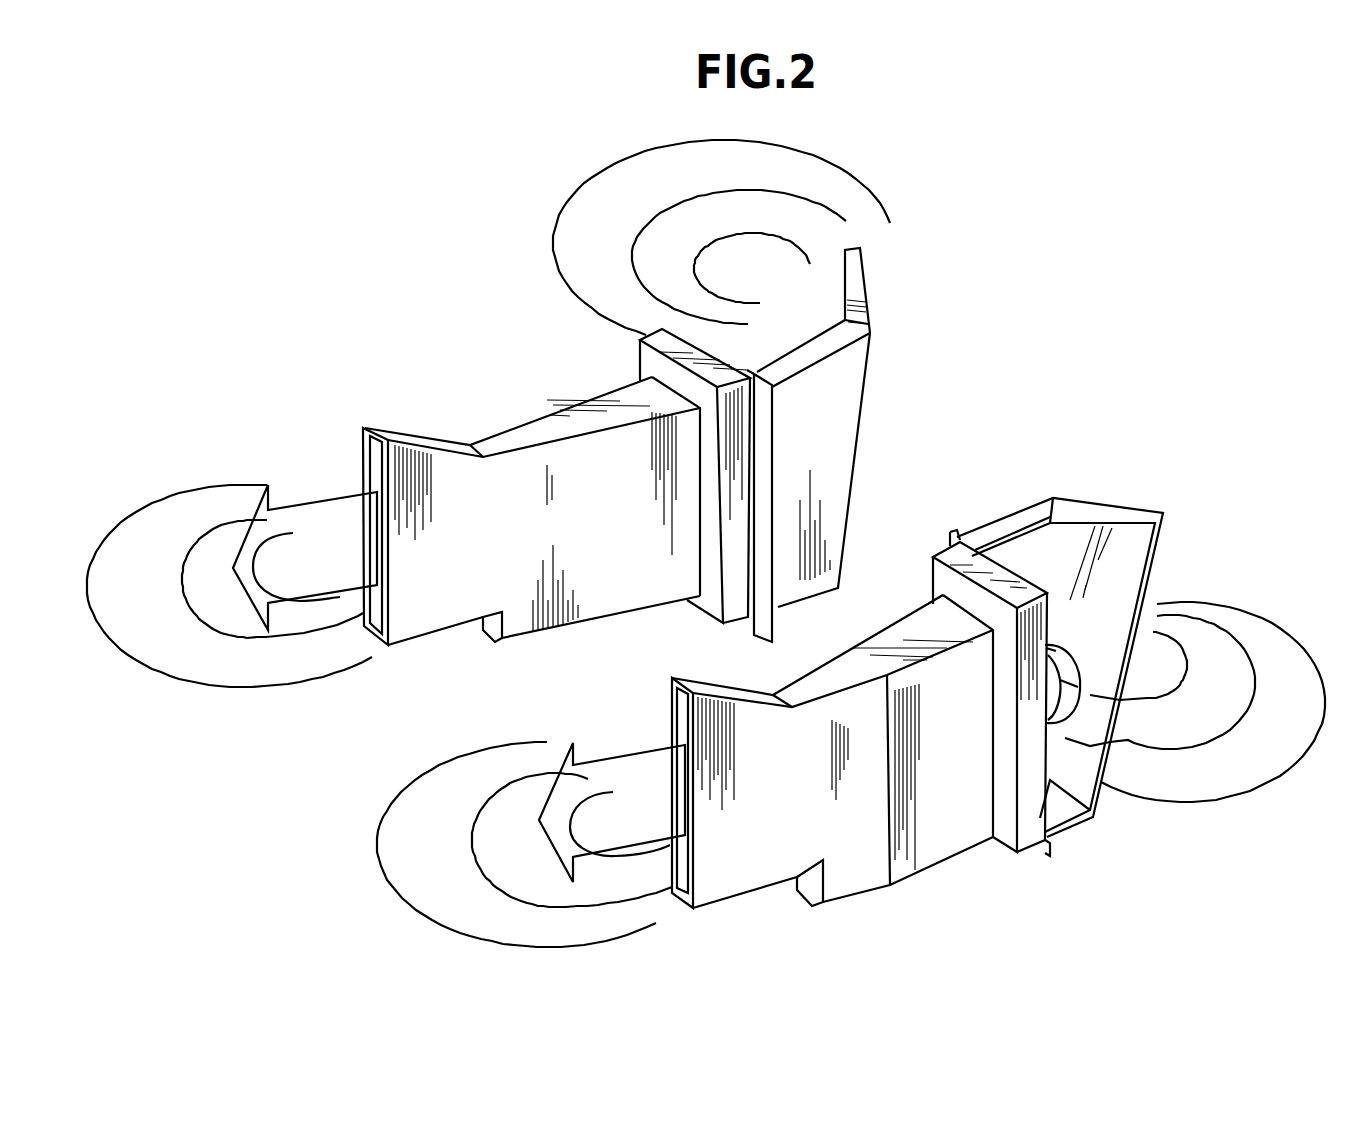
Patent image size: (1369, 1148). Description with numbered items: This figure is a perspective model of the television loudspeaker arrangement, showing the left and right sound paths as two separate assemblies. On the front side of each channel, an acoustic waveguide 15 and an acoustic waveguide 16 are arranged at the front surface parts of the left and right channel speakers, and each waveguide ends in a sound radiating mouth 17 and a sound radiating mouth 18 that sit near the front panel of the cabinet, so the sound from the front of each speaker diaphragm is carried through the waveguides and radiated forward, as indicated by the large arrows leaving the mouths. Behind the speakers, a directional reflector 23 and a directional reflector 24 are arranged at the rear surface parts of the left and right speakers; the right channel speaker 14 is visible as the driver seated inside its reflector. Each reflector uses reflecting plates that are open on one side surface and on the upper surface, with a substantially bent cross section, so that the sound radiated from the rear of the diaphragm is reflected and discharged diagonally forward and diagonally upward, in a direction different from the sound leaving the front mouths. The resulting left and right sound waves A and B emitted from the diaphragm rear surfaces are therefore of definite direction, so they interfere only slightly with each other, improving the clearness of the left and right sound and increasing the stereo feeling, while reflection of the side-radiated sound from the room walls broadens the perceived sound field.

The right channel speaker 14 is at (1063, 732).
The acoustic waveguide 15 is at (536, 422).
The acoustic waveguide 16 is at (857, 857).
The sound radiating mouth 17 is at (373, 453).
The sound radiating mouth 18 is at (680, 703).
The directional reflector 23 is at (842, 372).
The directional reflector 24 is at (1120, 572).
The left sound wave A is at (557, 220).
The right sound wave B is at (1270, 782).